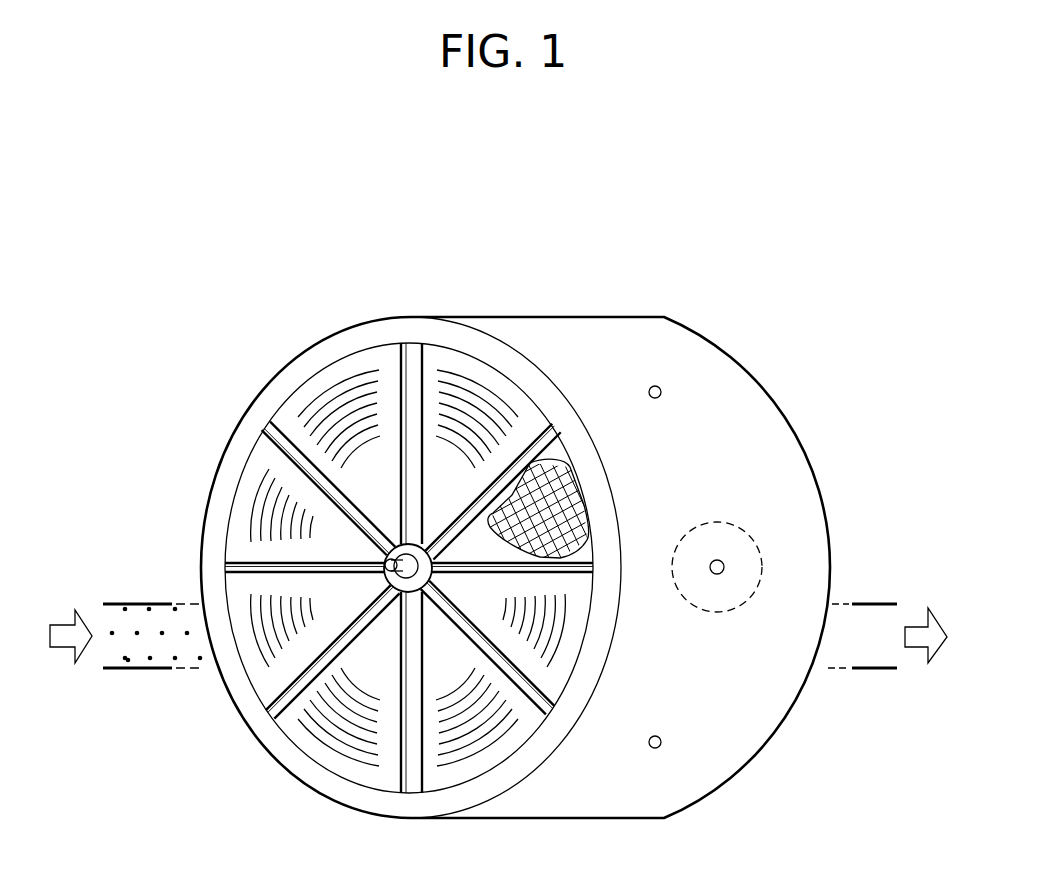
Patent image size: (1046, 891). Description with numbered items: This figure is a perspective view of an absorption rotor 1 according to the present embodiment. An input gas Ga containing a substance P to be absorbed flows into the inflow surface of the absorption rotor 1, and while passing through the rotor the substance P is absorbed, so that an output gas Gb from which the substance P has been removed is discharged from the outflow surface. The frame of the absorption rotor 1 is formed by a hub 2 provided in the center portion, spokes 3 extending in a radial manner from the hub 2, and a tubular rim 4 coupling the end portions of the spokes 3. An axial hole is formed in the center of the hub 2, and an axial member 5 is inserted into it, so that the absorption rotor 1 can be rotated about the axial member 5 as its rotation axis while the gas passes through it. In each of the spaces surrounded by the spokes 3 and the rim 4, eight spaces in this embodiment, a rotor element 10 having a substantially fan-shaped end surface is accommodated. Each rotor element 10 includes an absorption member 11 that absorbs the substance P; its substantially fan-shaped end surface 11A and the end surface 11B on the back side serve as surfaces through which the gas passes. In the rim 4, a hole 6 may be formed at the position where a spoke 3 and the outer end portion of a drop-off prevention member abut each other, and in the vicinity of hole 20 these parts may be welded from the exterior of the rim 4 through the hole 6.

The absorption rotor 1 is at (706, 194).
The hub 2 is at (398, 586).
The spoke 3 is at (285, 437).
The rim 4 is at (405, 337).
The axial member 5 is at (384, 582).
The hole 6 is at (723, 576).
The rotor element 10 is at (340, 385).
The absorption member 11 is at (558, 470).
The vicinity of hole 20 is at (712, 523).
The end surface 11A is at (215, 740).
The end surface 11B is at (830, 432).
The input gas Ga is at (111, 603).
The output gas Gb is at (868, 671).
The substance to be absorbed P is at (128, 663).